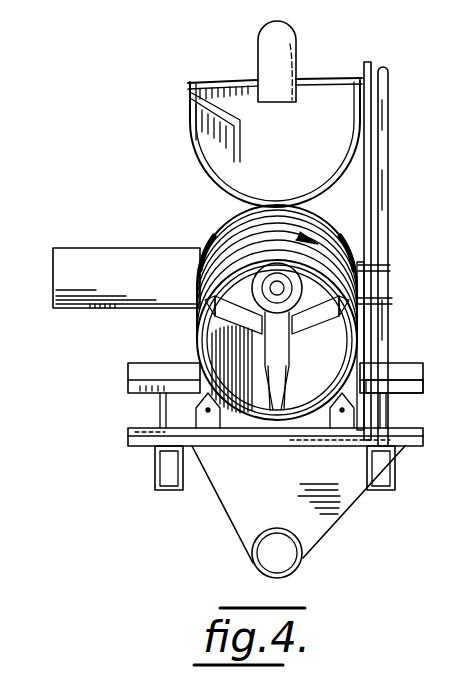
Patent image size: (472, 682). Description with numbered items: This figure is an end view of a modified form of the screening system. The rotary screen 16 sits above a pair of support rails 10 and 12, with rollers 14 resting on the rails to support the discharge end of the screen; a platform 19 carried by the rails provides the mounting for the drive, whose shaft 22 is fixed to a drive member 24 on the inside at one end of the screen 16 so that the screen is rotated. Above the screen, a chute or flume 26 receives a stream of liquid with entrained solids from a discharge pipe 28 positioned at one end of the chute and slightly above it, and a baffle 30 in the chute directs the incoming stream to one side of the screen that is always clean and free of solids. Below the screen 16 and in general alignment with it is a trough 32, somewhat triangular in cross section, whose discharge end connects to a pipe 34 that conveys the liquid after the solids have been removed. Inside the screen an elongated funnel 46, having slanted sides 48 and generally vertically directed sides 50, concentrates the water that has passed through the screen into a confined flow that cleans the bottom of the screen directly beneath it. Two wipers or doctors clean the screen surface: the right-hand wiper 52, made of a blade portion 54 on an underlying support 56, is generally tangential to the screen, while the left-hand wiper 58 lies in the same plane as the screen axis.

The support rail 10 is at (170, 490).
The support rail 12 is at (385, 490).
The rollers 14 is at (196, 404).
The screen 16 is at (325, 217).
The platform 19 is at (405, 376).
The shaft 22 is at (262, 282).
The drive member 24 is at (270, 284).
The chute or flume 26 is at (238, 80).
The discharge pipe 28 is at (294, 52).
The baffle 30 is at (208, 132).
The trough 32 is at (318, 522).
The pipe 34 is at (256, 568).
The elongated funnel 46 is at (355, 322).
The slanted sides 48 is at (215, 318).
The vertically directed sides 50 is at (288, 398).
The wiper 52 is at (378, 226).
The blade portion 54 is at (368, 268).
The underlying support 56 is at (372, 301).
The left-hand wiper 58 is at (128, 250).